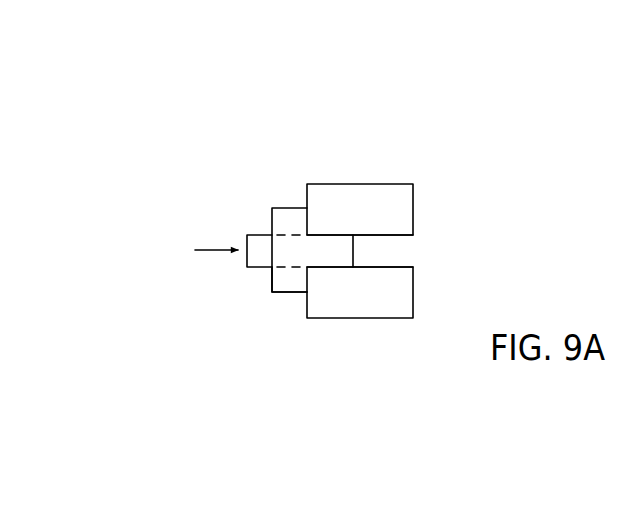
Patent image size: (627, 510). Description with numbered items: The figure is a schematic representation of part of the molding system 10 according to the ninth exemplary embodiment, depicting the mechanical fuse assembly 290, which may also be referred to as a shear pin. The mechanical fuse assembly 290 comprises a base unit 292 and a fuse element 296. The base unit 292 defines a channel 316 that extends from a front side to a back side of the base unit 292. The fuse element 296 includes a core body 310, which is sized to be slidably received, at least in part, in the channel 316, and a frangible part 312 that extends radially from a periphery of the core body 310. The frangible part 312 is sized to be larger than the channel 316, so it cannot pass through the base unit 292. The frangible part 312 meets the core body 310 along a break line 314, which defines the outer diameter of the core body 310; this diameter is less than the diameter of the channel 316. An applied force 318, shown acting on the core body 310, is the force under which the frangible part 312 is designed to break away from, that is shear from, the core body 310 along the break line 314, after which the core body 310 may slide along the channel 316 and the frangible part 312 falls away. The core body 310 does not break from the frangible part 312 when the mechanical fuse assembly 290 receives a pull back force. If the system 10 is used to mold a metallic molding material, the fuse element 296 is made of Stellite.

The molding system 10 is at (580, 129).
The mechanical fuse assembly 290 is at (461, 153).
The base unit 292 is at (383, 217).
The fuse element 296 is at (309, 259).
The core body 310 is at (333, 255).
The frangible part 312 is at (294, 280).
The break line 314 is at (287, 233).
The channel 316 is at (367, 242).
The applied force 318 is at (220, 250).